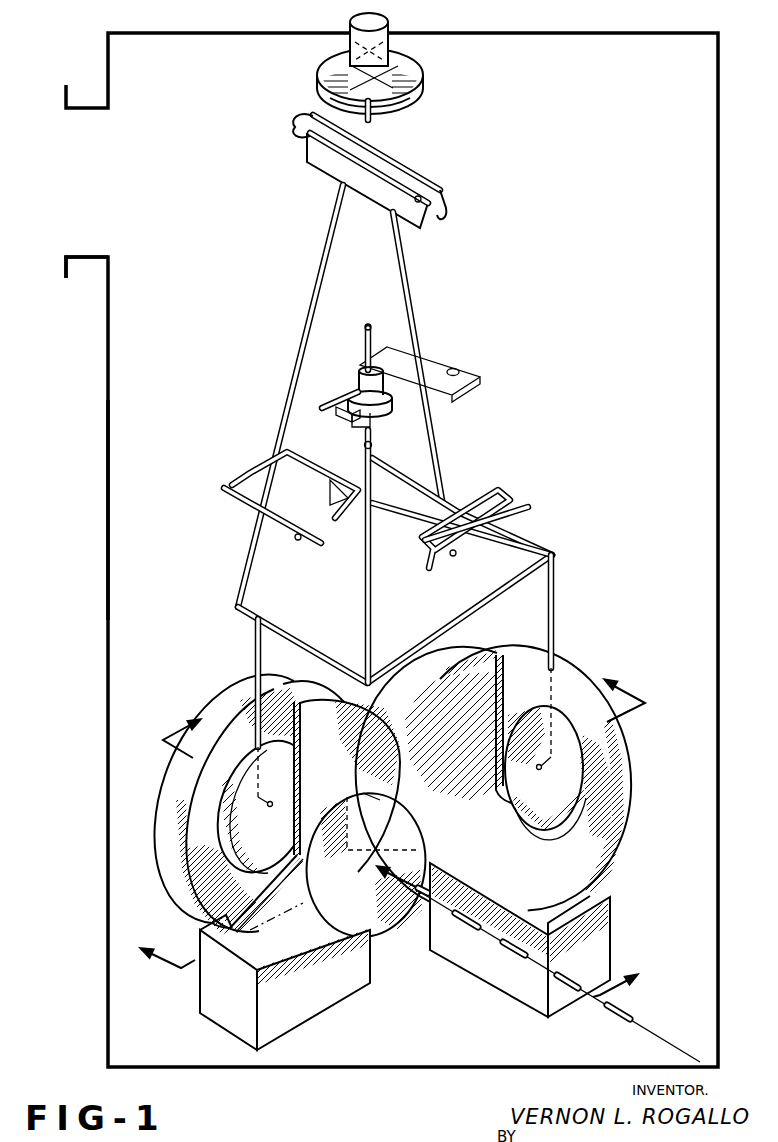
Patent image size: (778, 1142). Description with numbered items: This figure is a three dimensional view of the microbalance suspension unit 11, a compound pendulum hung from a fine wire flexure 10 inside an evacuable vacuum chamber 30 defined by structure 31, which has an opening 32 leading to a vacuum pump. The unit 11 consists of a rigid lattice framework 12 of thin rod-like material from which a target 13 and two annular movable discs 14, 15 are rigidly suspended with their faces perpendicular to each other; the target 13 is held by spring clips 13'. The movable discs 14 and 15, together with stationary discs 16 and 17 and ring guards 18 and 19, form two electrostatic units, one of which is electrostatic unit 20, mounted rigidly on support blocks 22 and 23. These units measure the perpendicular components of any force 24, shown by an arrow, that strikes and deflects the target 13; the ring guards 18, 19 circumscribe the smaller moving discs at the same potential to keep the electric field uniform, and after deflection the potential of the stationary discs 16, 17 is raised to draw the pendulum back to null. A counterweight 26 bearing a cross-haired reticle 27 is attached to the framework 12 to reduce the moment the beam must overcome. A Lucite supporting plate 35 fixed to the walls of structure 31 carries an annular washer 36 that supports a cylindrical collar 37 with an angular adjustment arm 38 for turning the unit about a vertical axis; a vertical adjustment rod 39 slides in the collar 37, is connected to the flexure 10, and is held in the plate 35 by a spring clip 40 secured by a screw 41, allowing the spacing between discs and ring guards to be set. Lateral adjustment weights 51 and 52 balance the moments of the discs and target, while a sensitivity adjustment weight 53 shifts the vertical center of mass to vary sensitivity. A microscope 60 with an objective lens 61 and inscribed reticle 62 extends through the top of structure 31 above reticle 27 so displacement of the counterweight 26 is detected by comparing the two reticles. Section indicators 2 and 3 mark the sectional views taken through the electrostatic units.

The fine wire flexure 10 is at (364, 442).
The suspension unit 11 is at (428, 286).
The lattice framework 12 is at (303, 336).
The target 13 is at (365, 866).
The spring clips 13' is at (339, 933).
The movable disc 14 is at (278, 838).
The movable disc 15 is at (563, 796).
The stationary disc 16 is at (372, 720).
The stationary disc 17 is at (432, 670).
The ring guard 18 is at (180, 826).
The ring guard 19 is at (628, 790).
The electrostatic unit 20 is at (166, 890).
The support block 22 is at (225, 1022).
The support block 23 is at (522, 1008).
The force 24 is at (495, 962).
The counterweight 26 is at (410, 101).
The cross-haired reticle 27 is at (408, 76).
The vacuum chamber 30 is at (586, 246).
The structure 31 is at (100, 516).
The opening 32 is at (68, 255).
The supporting plate 35 is at (447, 360).
The annular washer 36 is at (380, 413).
The cylindrical collar 37 is at (364, 376).
The angular adjustment arm 38 is at (340, 396).
The vertical adjustment rod 39 is at (370, 322).
The spring clip 40 is at (338, 420).
The screw 41 is at (354, 430).
The lateral adjustment weight 51 is at (511, 505).
The lateral adjustment weight 52 is at (245, 500).
The sensitivity adjustment weight 53 is at (445, 205).
The microscope 60 is at (388, 20).
The objective lens 61 is at (352, 44).
The reticle 62 is at (394, 50).
The section line 2- 2 is at (416, 849).
The section line 3- 3 is at (389, 825).